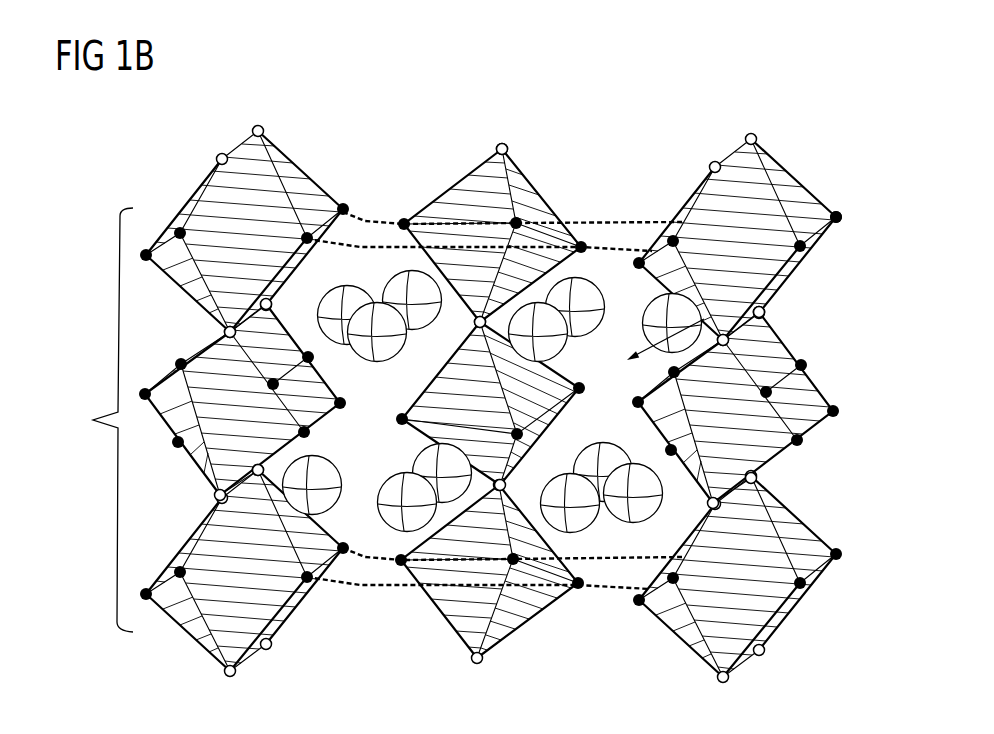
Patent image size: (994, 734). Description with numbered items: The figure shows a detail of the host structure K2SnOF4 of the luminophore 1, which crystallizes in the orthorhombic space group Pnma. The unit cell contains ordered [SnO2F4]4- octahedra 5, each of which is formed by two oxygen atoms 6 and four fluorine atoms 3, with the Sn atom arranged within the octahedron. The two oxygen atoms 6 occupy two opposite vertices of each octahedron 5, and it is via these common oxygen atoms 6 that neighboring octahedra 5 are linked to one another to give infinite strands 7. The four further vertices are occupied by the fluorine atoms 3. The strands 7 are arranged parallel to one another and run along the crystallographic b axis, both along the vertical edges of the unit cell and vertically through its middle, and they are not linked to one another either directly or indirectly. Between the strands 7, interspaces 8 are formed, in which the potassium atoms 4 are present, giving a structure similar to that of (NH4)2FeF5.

The luminophore 1 is at (523, 386).
The F atom 3 is at (841, 217).
The K atom 4 is at (643, 485).
The [SnO2F4]4- octahedron 5 is at (302, 158).
The O atom 6 is at (502, 146).
The strand 7 is at (104, 420).
The interspace 8 is at (766, 313).